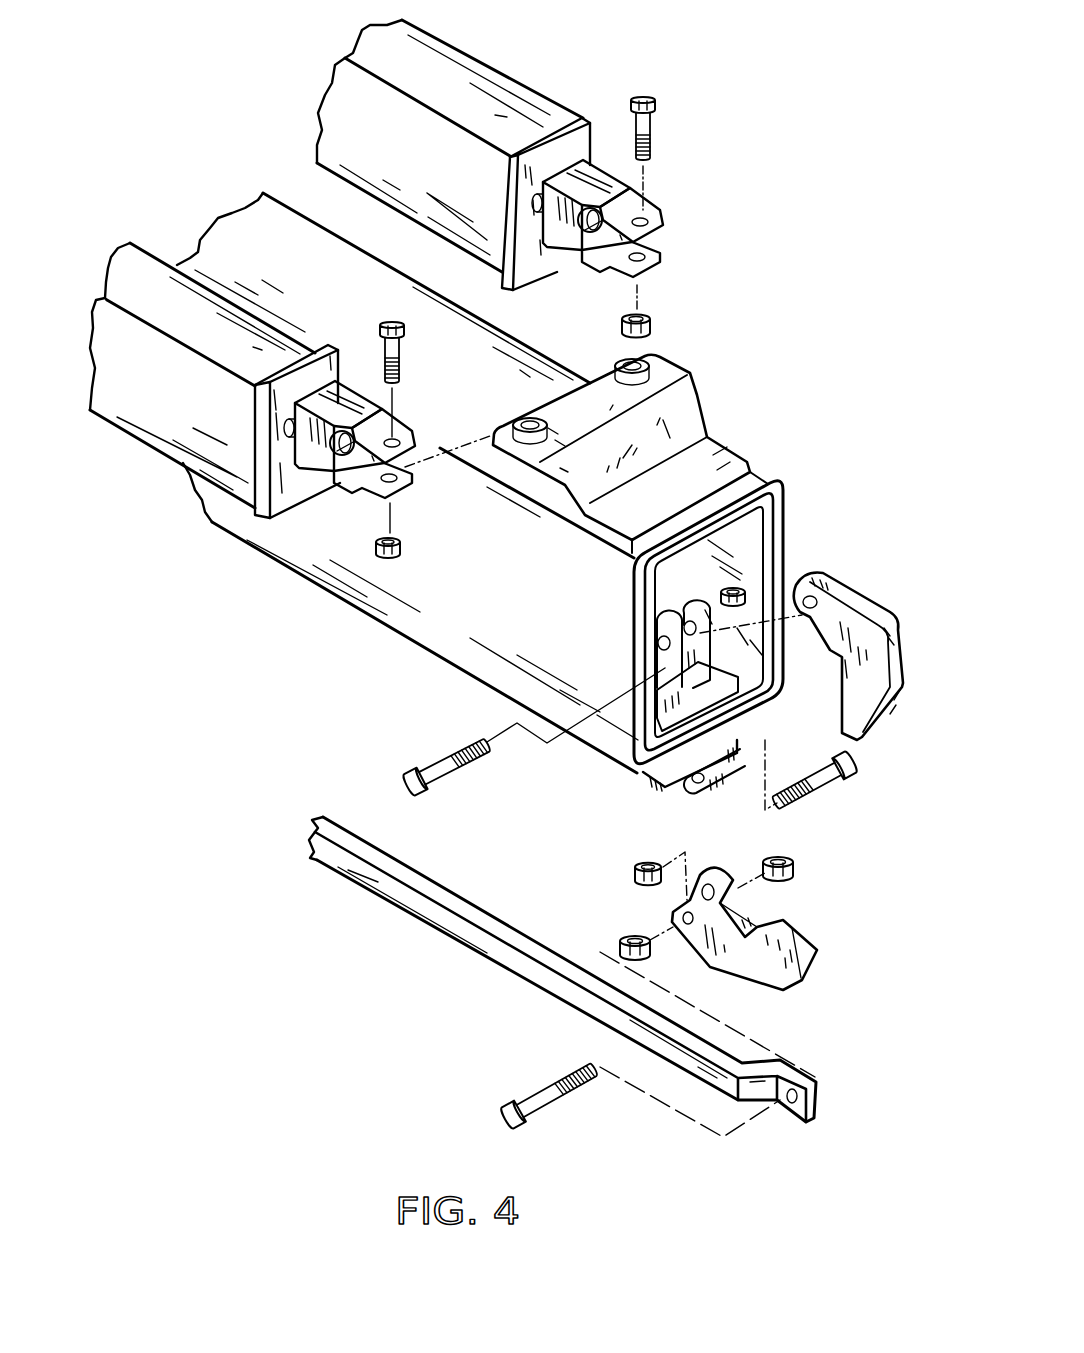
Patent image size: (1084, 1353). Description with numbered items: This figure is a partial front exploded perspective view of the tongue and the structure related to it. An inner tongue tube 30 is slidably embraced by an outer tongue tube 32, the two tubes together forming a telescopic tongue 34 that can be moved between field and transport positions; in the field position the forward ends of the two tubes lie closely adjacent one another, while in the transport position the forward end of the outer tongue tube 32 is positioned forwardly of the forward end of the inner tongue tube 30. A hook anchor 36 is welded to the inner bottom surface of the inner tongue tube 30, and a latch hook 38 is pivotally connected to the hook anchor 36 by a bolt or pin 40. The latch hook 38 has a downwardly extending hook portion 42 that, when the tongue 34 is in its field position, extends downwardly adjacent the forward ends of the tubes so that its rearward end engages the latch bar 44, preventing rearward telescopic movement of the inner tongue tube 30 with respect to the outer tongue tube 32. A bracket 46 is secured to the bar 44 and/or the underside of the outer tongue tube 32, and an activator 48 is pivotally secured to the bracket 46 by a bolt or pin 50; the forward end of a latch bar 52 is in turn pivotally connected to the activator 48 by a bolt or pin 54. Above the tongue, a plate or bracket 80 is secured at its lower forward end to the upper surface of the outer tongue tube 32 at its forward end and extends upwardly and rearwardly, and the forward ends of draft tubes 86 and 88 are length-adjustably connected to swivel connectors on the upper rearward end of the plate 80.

The inner tongue tube 30 is at (748, 535).
The outer tongue tube 32 is at (488, 567).
The telescopic tongue 34 is at (363, 642).
The hook anchor 36 is at (657, 638).
The latch hook 38 is at (892, 603).
The bolt or pin 40 is at (443, 757).
The hook portion 42 is at (860, 720).
The latch bar 44 is at (653, 783).
The bracket 46 is at (731, 770).
The activator 48 is at (770, 920).
The bolt or pin 50 is at (833, 773).
The latch bar 52 is at (552, 982).
The bolt or pin 54 is at (552, 1102).
The plate or bracket 80 is at (670, 423).
The draft tube 86 is at (143, 277).
The draft tube 88 is at (477, 105).